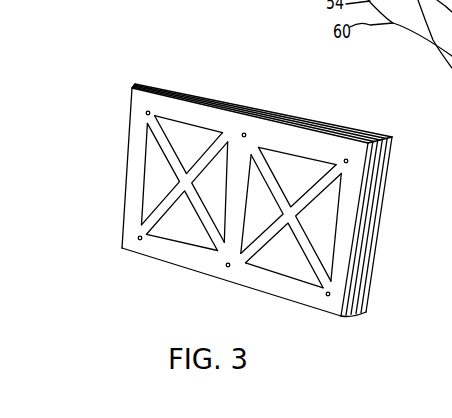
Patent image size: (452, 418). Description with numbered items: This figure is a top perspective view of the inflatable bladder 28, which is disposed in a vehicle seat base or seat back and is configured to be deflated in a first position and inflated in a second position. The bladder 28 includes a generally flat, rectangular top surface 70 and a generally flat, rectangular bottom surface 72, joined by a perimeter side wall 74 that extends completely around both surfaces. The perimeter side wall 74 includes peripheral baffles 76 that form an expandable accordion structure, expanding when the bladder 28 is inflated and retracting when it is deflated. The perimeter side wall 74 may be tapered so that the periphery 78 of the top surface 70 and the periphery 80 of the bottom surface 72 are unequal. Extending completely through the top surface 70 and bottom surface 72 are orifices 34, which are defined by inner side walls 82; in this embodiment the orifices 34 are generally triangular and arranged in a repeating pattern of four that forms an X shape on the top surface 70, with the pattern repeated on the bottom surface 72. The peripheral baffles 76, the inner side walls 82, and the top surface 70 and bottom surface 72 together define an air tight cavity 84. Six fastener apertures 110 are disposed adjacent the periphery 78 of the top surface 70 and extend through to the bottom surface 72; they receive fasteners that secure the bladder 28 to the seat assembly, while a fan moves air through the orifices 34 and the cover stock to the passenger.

The inflatable bladder 28 is at (117, 60).
The orifice 34 is at (213, 128).
The top surface 70 is at (344, 276).
The bottom surface 72 is at (386, 191).
The perimeter side wall 74 is at (371, 242).
The peripheral baffle 76 is at (352, 318).
The periphery of the top surface 78 is at (131, 88).
The periphery of the bottom surface 80 is at (165, 85).
The inner side wall 82 is at (175, 133).
The air tight cavity 84 is at (122, 216).
The fastener aperture 110 is at (146, 113).